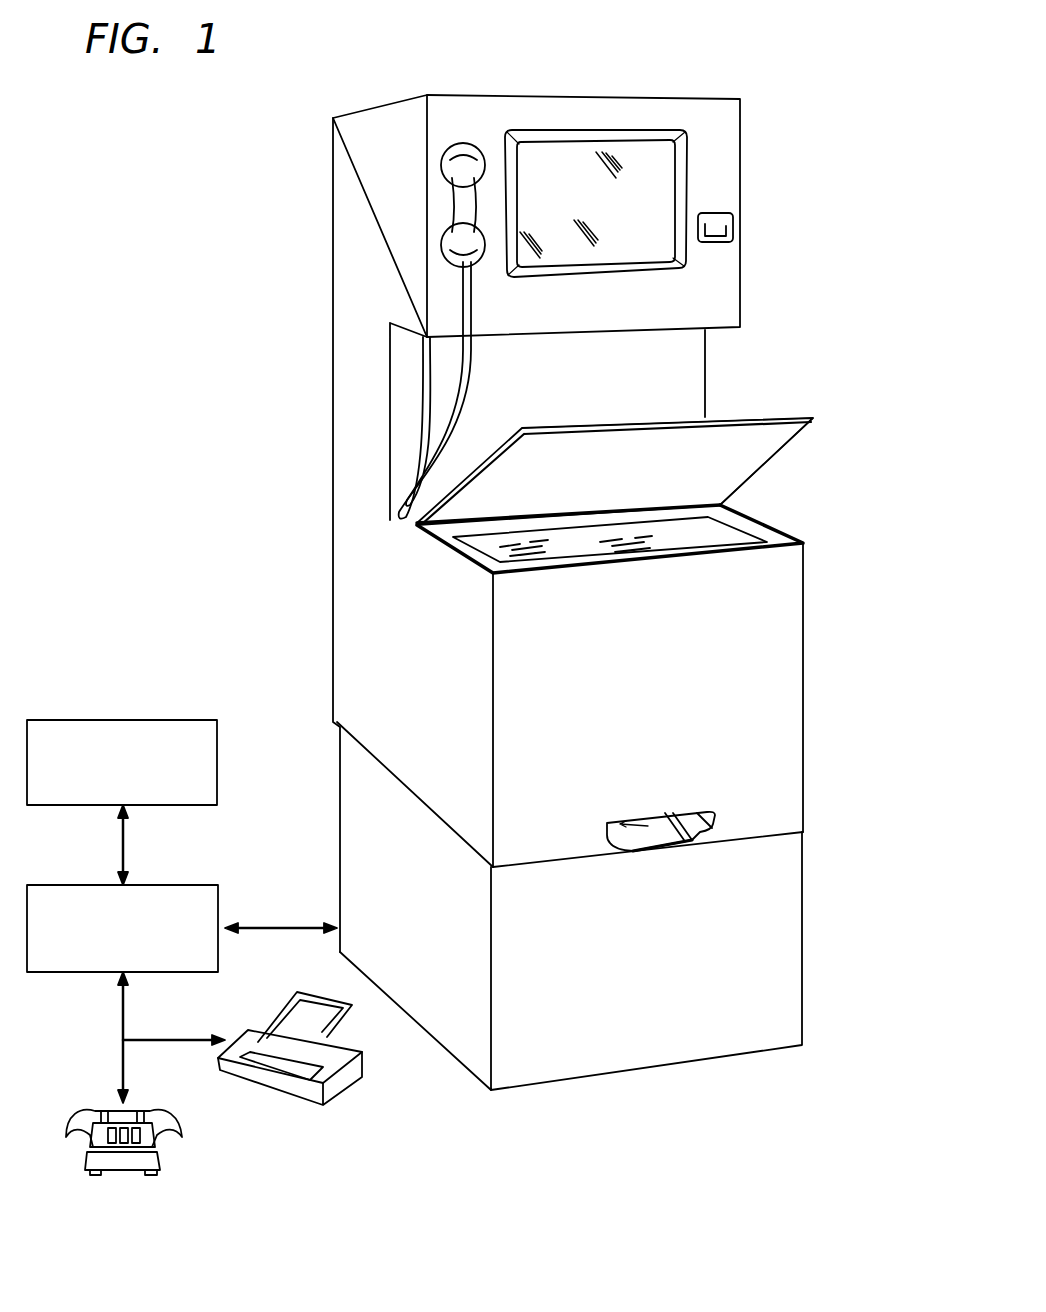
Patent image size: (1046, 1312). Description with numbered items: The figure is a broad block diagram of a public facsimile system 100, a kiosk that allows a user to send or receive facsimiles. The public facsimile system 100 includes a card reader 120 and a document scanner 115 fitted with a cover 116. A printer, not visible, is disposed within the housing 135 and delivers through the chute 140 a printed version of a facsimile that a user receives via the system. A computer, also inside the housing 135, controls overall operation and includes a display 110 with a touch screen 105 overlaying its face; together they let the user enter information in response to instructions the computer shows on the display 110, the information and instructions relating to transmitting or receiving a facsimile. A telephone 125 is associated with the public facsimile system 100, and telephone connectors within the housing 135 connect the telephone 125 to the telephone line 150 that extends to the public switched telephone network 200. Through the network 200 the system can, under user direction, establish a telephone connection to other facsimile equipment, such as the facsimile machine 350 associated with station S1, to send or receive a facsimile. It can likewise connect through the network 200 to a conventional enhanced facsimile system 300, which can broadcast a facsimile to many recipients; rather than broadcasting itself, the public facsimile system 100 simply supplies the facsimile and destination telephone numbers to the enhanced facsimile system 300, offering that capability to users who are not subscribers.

The public facsimile system 100 is at (692, 1125).
The touch screen 105 is at (678, 202).
The display 110 is at (637, 165).
The document scanner 115 is at (722, 533).
The cover 116 is at (777, 446).
The card reader 120 is at (727, 228).
The telephone 125 is at (447, 160).
The housing 135 is at (798, 695).
The chute 140 is at (672, 840).
The telephone line 150 is at (263, 923).
The public switched telephone network 200 is at (180, 885).
The enhanced facsimile system 300 is at (182, 722).
The facsimile machine 350 is at (342, 1095).
The station S1 is at (160, 1163).